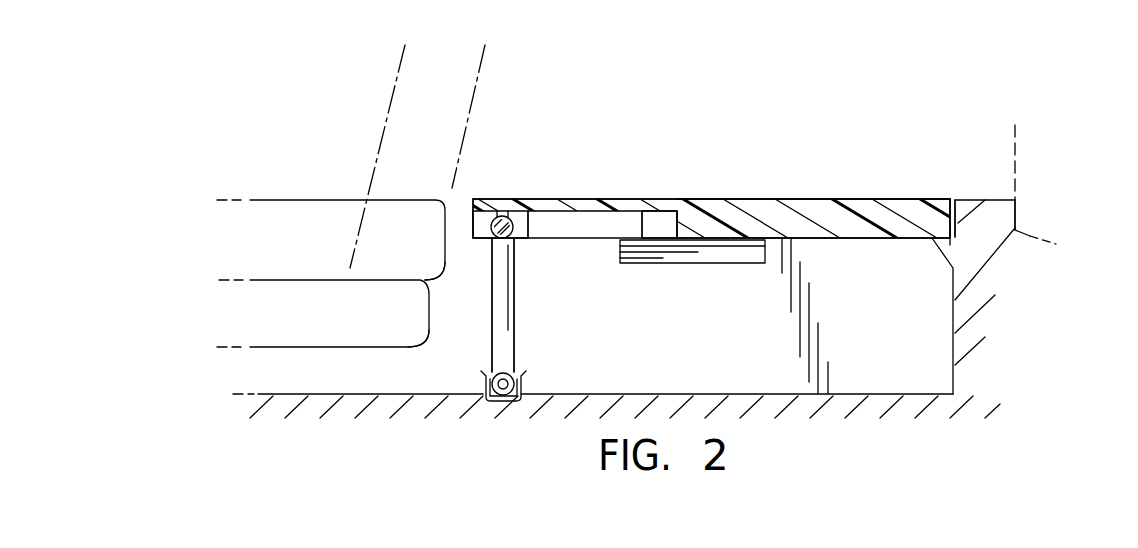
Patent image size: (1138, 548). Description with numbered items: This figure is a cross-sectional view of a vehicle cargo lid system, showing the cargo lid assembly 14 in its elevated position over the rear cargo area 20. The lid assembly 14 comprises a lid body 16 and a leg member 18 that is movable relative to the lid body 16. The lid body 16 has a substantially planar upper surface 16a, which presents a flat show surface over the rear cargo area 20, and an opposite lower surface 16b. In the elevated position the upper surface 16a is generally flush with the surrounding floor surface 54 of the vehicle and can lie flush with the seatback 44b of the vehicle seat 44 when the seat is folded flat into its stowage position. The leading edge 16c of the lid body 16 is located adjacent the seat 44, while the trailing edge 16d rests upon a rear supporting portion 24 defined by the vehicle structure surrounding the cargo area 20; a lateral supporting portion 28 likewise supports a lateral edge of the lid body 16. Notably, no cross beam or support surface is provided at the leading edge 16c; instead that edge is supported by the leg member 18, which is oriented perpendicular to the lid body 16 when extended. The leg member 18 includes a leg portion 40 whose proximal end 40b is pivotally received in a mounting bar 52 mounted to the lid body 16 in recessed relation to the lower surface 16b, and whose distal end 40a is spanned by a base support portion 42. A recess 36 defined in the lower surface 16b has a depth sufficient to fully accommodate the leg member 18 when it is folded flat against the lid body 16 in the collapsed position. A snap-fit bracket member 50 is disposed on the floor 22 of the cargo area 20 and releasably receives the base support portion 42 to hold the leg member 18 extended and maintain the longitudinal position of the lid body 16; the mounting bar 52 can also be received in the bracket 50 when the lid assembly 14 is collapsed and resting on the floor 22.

The cargo lid assembly 14 is at (804, 178).
The lid body 16 is at (757, 190).
The upper surface 16a is at (821, 199).
The lower surface 16b is at (822, 240).
The leading edge 16c is at (472, 203).
The trailing edge 16d is at (953, 223).
The leg member 18 is at (528, 328).
The rear cargo area 20 is at (936, 318).
The floor 22 is at (920, 391).
The rear supporting portion 24 is at (938, 237).
The lateral supporting portion 28 is at (718, 237).
The recess 36 is at (658, 228).
The leg portion 40 is at (503, 298).
The distal end 40a is at (488, 365).
The proximal end 40b is at (493, 245).
The base support portion 42 is at (503, 373).
The vehicle seat 44 is at (300, 194).
The seatback 44b is at (398, 198).
The bracket member 50 is at (516, 383).
The mounting bar 52 is at (513, 237).
The surrounding floor surface 54 is at (988, 200).